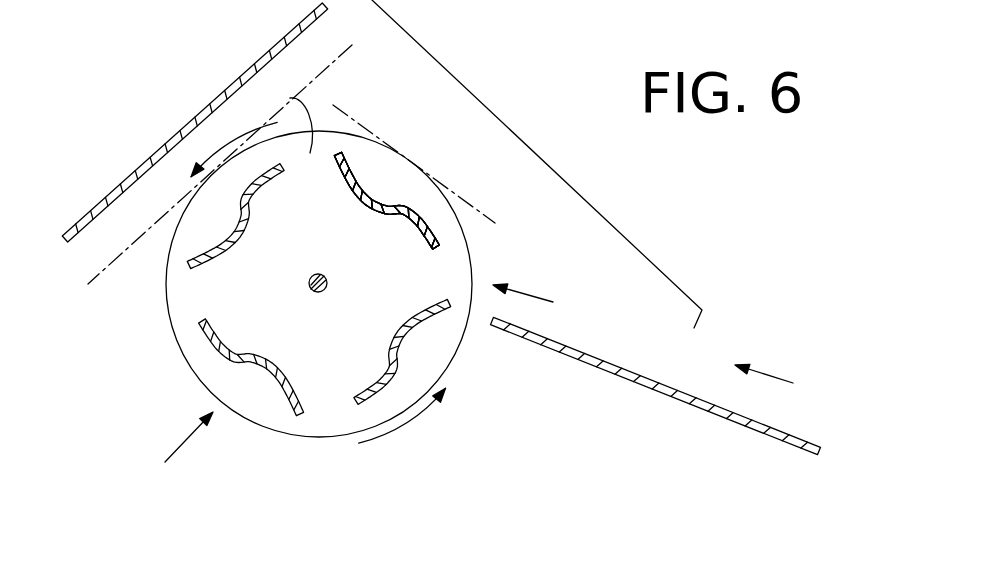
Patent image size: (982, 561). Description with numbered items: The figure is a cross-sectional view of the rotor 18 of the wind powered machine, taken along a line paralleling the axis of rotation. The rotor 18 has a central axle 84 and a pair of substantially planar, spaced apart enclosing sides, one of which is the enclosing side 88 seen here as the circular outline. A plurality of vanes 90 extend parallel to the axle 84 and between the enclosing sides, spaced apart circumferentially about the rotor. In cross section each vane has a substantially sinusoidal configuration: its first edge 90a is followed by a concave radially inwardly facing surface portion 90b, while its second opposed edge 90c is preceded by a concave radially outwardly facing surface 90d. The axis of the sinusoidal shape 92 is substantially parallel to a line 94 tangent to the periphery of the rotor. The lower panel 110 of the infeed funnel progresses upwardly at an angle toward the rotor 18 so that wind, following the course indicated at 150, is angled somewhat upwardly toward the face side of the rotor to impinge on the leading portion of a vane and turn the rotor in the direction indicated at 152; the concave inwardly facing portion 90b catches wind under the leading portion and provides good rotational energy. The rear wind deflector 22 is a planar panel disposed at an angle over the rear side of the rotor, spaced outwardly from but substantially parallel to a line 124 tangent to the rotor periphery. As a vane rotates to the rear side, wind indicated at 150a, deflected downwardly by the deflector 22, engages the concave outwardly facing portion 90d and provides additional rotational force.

The rotor 18 is at (176, 453).
The rear wind deflector 22 is at (247, 70).
The central axle 84 is at (305, 283).
The enclosing side 88 is at (207, 370).
The vanes 90 is at (280, 178).
The first edge 90a is at (436, 248).
The concave radially inwardly facing surface portion 90b is at (393, 213).
The second opposed edge 90c is at (343, 152).
The concave radially outwardly facing surface 90d is at (345, 158).
The axis of the sinusoidal shape 92 is at (290, 98).
The tangent line 94 is at (436, 180).
The lower panel 110 is at (598, 357).
The tangent line 124 is at (100, 272).
The wind course 150 is at (773, 375).
The deflected wind 150a is at (238, 135).
The direction of rotation 152 is at (382, 445).